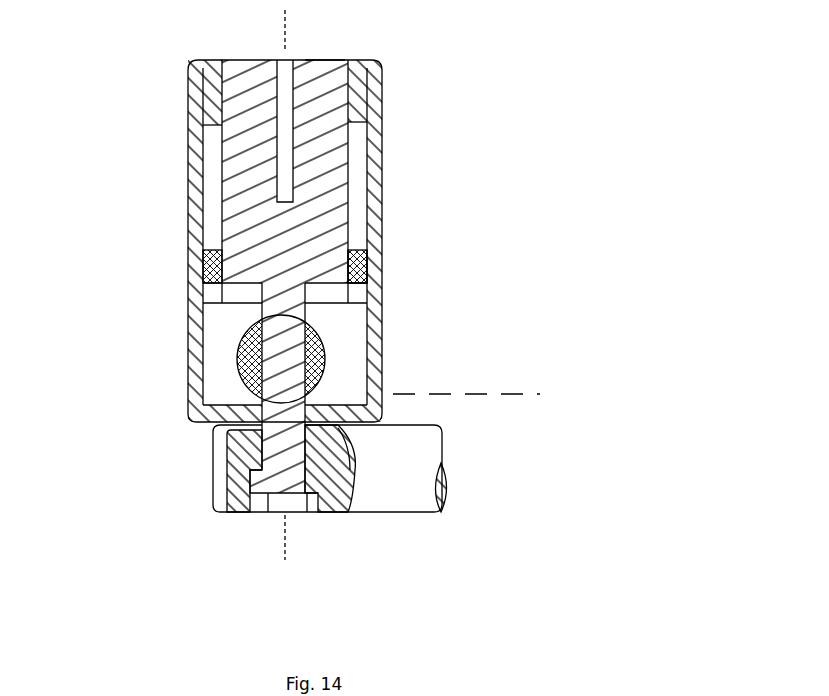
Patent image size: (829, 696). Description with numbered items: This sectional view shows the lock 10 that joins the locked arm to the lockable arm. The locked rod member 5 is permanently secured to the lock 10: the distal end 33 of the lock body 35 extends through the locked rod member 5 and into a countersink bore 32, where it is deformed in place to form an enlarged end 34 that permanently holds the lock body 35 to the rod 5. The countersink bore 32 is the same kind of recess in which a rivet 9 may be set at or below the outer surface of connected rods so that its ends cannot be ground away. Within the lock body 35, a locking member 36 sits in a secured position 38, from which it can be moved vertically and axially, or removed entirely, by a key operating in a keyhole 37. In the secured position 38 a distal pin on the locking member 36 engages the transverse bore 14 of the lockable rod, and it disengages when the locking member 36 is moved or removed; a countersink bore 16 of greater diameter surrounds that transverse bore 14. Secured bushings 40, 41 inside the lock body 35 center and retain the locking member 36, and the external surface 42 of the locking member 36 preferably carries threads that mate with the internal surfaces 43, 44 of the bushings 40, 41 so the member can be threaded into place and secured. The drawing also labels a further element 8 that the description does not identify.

The lock 10 is at (188, 257).
The secured bushing 40 is at (363, 61).
The external surface of locking member 42 is at (382, 186).
The keyhole 37 is at (282, 60).
The locking member 36 is at (327, 61).
The internal surface of bushing 44 is at (383, 118).
The internal surface of bushing 43 is at (348, 252).
The secured bushing 41 is at (362, 268).
The lock body 35 is at (383, 328).
The countersink bore 32 is at (243, 342).
The cavity 8 is at (243, 370).
The countersink bore 16 is at (312, 340).
The transverse bore 14 is at (322, 362).
The secured position 38 is at (530, 394).
The locked rod member 5 is at (372, 513).
The distal end of lock body 33 is at (262, 457).
The enlarged end 34 is at (311, 513).
The rivet 9 is at (268, 513).